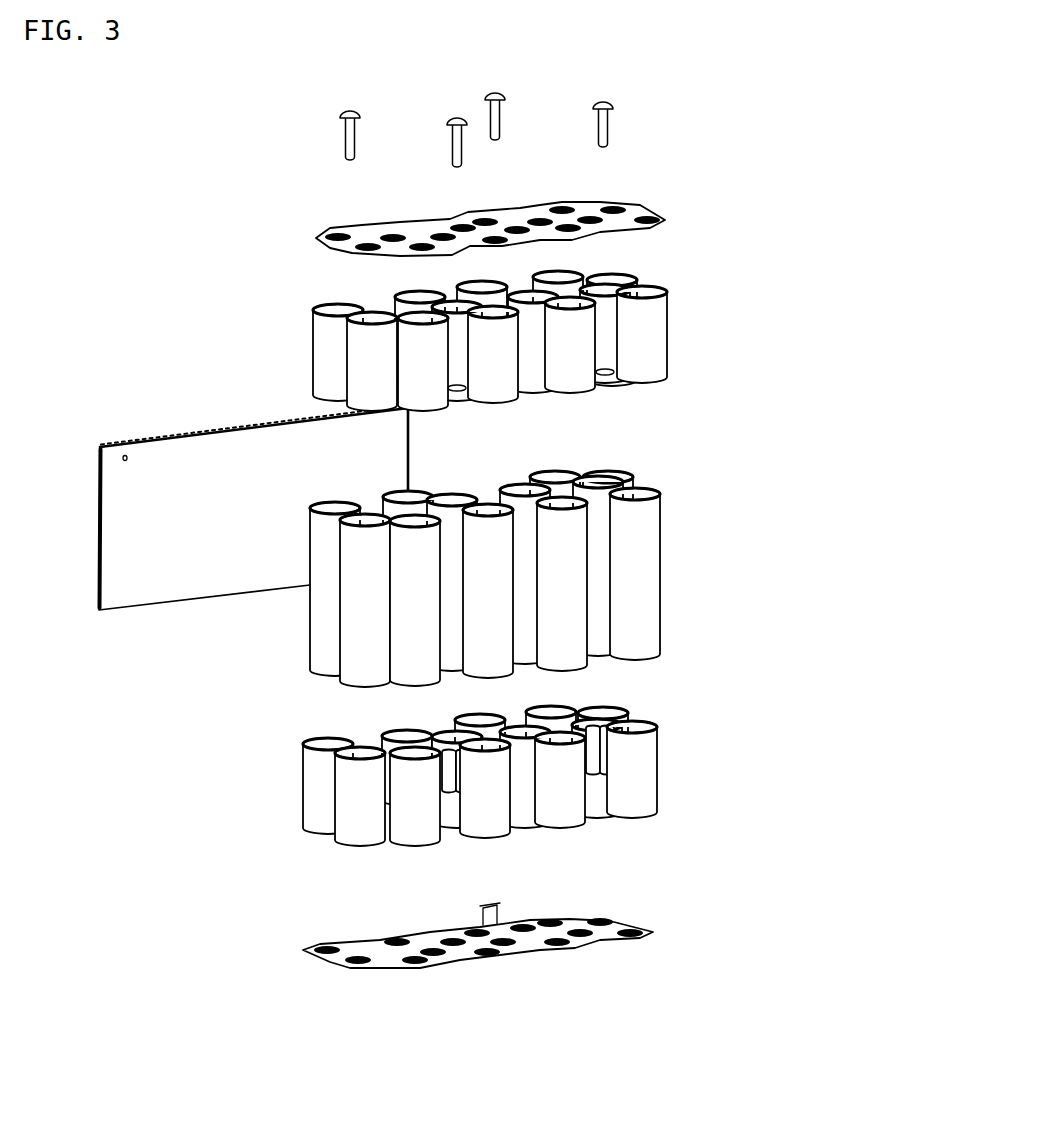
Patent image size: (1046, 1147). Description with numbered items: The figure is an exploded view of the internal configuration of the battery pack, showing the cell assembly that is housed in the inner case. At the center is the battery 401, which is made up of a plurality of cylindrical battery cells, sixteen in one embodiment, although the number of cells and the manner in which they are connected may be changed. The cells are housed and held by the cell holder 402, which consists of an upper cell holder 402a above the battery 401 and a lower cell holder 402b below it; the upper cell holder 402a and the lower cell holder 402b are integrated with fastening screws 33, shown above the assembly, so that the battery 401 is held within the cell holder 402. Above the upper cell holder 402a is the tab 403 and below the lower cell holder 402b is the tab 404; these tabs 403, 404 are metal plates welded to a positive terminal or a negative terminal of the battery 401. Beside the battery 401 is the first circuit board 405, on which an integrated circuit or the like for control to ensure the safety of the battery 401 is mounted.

The fastening screws 33 is at (620, 127).
The tab 403 is at (665, 222).
The upper cell holder 402a is at (673, 333).
The cell holder 402 is at (601, 558).
The battery 401 is at (668, 562).
The lower cell holder 402b is at (778, 767).
The first circuit board 405 is at (174, 431).
The tab 404 is at (653, 933).